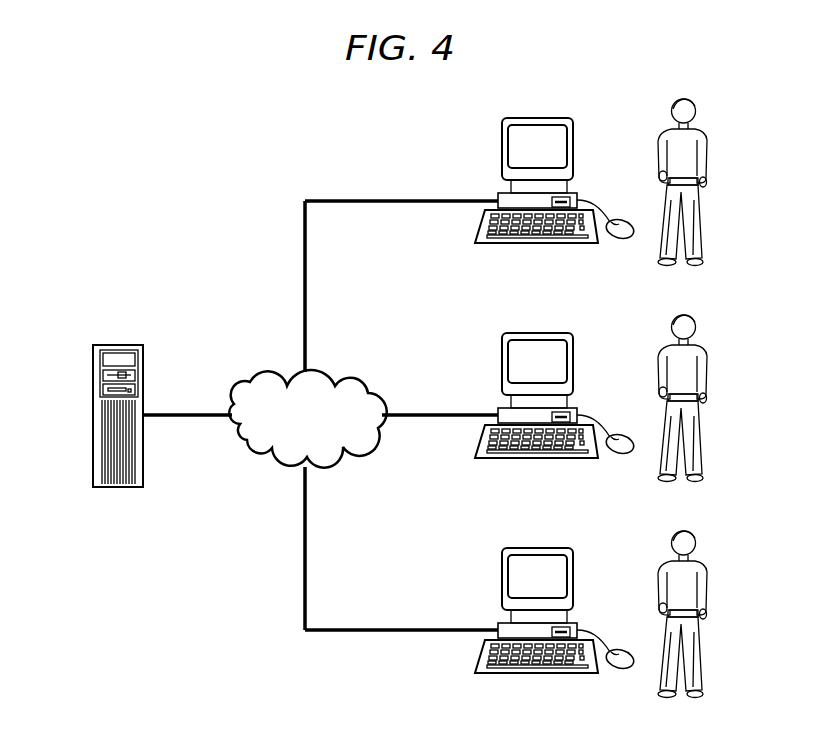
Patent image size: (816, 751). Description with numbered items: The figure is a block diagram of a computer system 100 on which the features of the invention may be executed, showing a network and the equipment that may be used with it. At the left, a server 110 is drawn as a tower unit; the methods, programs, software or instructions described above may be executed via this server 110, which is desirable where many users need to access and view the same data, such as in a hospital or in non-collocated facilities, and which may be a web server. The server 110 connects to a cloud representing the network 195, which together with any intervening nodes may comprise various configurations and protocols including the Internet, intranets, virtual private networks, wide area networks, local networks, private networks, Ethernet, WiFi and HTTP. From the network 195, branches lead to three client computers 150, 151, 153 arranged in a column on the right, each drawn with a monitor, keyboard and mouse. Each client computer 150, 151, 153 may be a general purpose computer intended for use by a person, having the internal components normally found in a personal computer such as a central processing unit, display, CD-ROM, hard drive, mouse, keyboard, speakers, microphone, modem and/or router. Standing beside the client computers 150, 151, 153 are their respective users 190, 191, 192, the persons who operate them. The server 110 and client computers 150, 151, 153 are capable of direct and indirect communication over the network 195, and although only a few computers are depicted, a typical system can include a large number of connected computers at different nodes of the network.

The system 100 is at (231, 131).
The server 110 is at (92, 420).
The network 195 is at (258, 378).
The client computer 150 is at (502, 142).
The client computer 151 is at (538, 395).
The client computer 153 is at (538, 610).
The user 190 is at (707, 161).
The user 191 is at (711, 398).
The user 192 is at (711, 614).